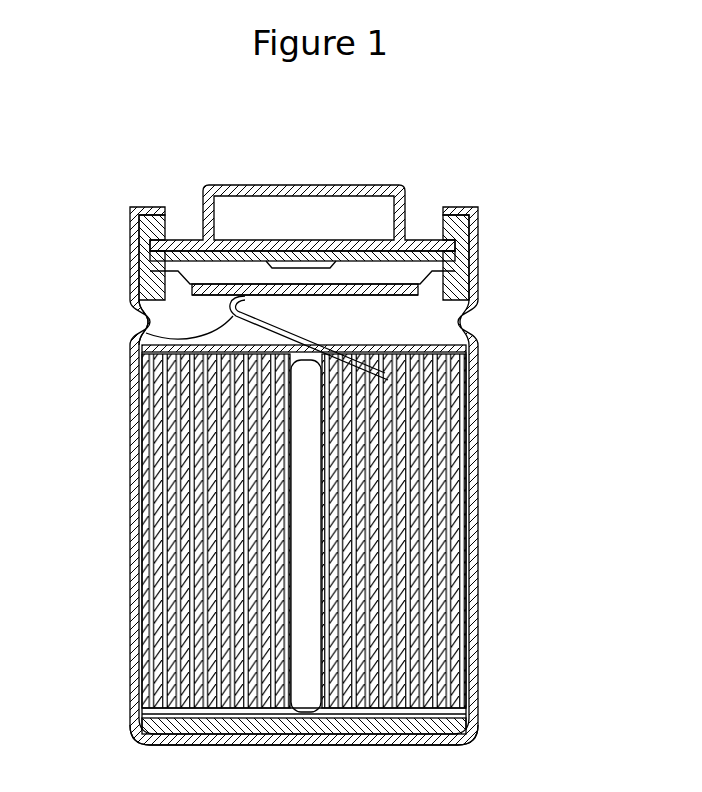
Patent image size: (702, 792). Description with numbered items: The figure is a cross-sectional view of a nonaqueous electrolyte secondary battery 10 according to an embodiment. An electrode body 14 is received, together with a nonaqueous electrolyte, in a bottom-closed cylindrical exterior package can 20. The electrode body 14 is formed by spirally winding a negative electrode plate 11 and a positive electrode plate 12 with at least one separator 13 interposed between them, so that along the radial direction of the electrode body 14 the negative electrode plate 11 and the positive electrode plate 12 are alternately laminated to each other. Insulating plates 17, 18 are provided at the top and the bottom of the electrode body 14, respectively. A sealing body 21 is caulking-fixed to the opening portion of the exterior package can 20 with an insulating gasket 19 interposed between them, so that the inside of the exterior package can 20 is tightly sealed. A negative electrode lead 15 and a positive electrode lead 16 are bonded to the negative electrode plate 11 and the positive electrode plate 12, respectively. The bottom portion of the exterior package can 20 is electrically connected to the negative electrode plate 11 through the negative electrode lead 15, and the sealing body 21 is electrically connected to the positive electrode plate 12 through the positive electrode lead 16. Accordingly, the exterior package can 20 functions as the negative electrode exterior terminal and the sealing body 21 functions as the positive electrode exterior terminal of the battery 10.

The nonaqueous electrolyte secondary battery 10 is at (93, 140).
The negative electrode plate 11 is at (480, 413).
The positive electrode plate 12 is at (480, 458).
The separator 13 is at (577, 393).
The electrode body 14 is at (388, 537).
The negative electrode lead 15 is at (156, 721).
The positive electrode lead 16 is at (150, 332).
The insulating plate 17 is at (175, 335).
The insulating plate 18 is at (150, 747).
The insulating gasket 19 is at (133, 291).
The exterior package can 20 is at (480, 566).
The sealing body 21 is at (404, 181).